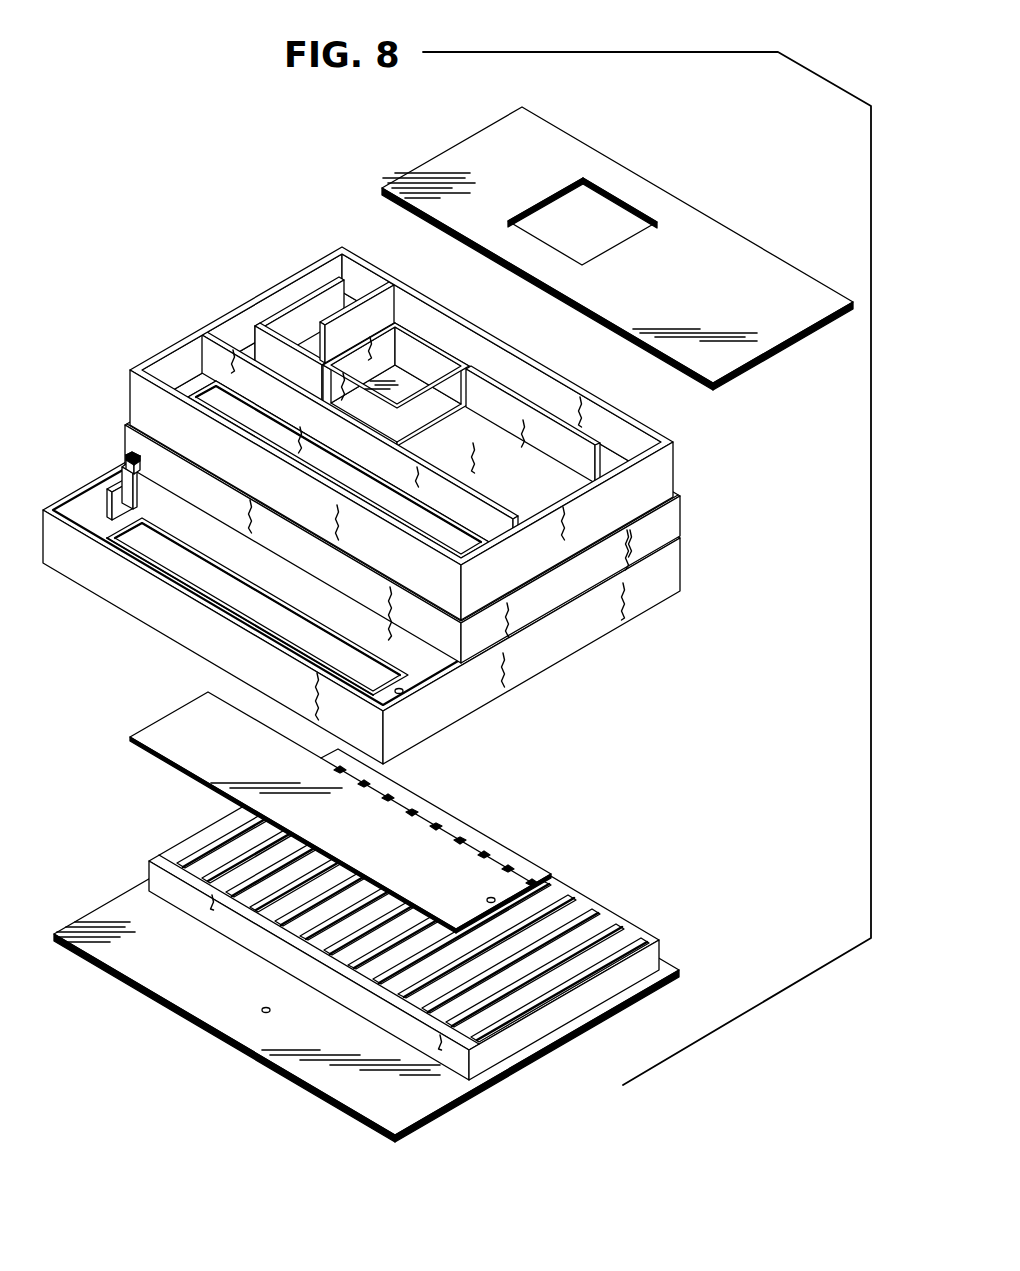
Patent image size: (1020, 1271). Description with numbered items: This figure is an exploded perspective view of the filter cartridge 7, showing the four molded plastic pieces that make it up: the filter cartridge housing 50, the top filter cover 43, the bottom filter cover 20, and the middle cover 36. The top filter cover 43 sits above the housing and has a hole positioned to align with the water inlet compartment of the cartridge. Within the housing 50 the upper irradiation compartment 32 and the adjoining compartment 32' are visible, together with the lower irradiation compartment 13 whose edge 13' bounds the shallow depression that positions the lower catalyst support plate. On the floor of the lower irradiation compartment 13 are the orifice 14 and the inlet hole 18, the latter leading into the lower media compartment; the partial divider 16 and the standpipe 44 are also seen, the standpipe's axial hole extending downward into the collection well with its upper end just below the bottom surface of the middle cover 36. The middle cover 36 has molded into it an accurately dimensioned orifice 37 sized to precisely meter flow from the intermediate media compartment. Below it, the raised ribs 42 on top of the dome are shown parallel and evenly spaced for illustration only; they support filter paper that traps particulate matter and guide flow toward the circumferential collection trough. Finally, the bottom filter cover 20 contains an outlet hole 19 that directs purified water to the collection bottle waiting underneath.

The filter cartridge 7 is at (384, 433).
The lower irradiation compartment 13 is at (257, 606).
The slot edge 13' is at (240, 616).
The orifice 14 is at (100, 515).
The partial divider 16 is at (122, 467).
The inlet hole 18 is at (400, 693).
The outlet hole 19 is at (271, 1010).
The bottom filter cover 20 is at (179, 984).
The upper irradiation compartment 32 is at (338, 488).
The compartment 32' is at (220, 340).
The middle cover 36 is at (166, 741).
The orifice 37 is at (491, 900).
The raised ribs 42 is at (571, 912).
The top filter cover 43 is at (555, 140).
The standpipe 44 is at (125, 452).
The filter cartridge housing 50 is at (50, 535).